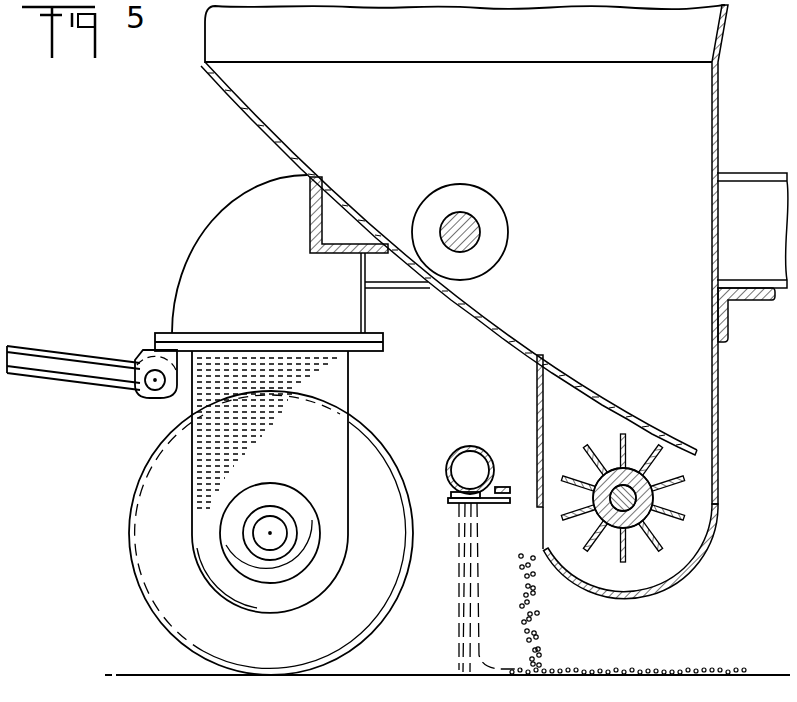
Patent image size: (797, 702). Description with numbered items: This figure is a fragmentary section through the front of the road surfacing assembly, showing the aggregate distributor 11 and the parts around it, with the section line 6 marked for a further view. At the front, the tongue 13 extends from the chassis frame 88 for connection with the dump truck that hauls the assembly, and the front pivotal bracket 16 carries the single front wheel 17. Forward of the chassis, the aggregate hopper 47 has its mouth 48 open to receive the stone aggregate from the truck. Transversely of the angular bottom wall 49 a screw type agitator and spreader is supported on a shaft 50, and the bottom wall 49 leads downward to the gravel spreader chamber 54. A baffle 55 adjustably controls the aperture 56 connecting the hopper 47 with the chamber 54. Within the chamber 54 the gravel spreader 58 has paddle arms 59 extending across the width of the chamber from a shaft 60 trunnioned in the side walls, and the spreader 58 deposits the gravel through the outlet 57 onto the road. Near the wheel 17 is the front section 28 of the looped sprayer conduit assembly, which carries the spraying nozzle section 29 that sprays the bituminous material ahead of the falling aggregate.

The section line 6- 6 is at (168, 3).
The aggregate distributor 11 is at (192, 74).
The tongue 13 is at (48, 358).
The front pivotal bracket 16 is at (340, 385).
The front wheel 17 is at (145, 518).
The front section 28 is at (448, 460).
The spraying nozzle section 29 is at (450, 498).
The aggregate hopper 47 is at (585, 117).
The mouth 48 is at (678, 23).
The angular bottom wall 49 is at (262, 125).
The shaft 50 is at (480, 223).
The gravel spreader chamber 54 is at (692, 566).
The baffle 55 is at (596, 402).
The aperture 56 is at (700, 448).
The outlet 57 is at (540, 515).
The gravel spreader 58 is at (594, 497).
The paddle arms 59 is at (625, 538).
The shaft 60 is at (636, 497).
The chassis frame 88 is at (752, 174).